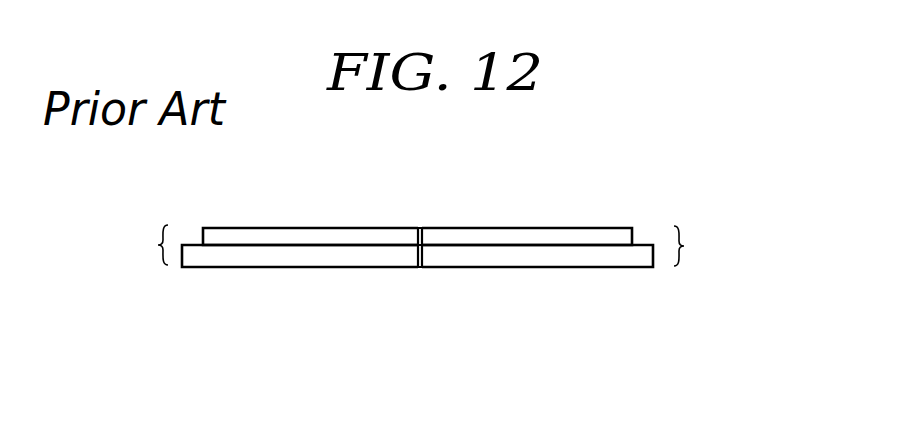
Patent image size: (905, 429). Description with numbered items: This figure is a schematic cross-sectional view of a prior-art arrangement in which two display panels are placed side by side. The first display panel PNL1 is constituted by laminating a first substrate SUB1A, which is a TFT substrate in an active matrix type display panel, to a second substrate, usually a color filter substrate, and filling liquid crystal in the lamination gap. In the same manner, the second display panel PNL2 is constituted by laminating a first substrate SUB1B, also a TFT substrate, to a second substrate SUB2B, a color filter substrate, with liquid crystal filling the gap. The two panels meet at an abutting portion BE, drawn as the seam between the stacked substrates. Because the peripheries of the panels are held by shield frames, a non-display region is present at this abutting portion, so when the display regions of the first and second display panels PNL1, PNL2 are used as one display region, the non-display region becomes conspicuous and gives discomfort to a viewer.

The first substrate SUB1A is at (291, 228).
The second substrate SUB2B is at (592, 228).
The first substrate SUB1B is at (570, 263).
The abutting portion BE is at (418, 228).
The first display panel PNL1 is at (130, 245).
The second display panel PNL2 is at (718, 246).